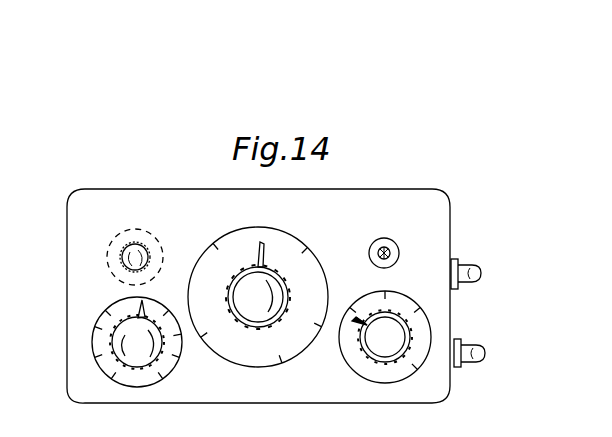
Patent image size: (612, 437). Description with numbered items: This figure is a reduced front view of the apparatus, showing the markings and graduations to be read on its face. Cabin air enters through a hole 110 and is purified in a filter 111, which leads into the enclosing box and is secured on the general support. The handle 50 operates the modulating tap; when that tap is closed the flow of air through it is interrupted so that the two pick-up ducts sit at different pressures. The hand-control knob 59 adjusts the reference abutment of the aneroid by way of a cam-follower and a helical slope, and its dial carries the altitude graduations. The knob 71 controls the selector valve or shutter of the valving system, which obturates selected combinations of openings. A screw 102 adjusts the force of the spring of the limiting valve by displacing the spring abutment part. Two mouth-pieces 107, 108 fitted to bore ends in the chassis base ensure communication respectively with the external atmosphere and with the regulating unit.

The hole 110 is at (122, 257).
The filter 111 is at (152, 236).
The handle 50 is at (120, 348).
The hand-control knob 59 is at (258, 312).
The knob 71 is at (392, 334).
The screw 102 is at (398, 253).
The mouth-piece 108 is at (478, 272).
The mouth-piece 107 is at (483, 356).